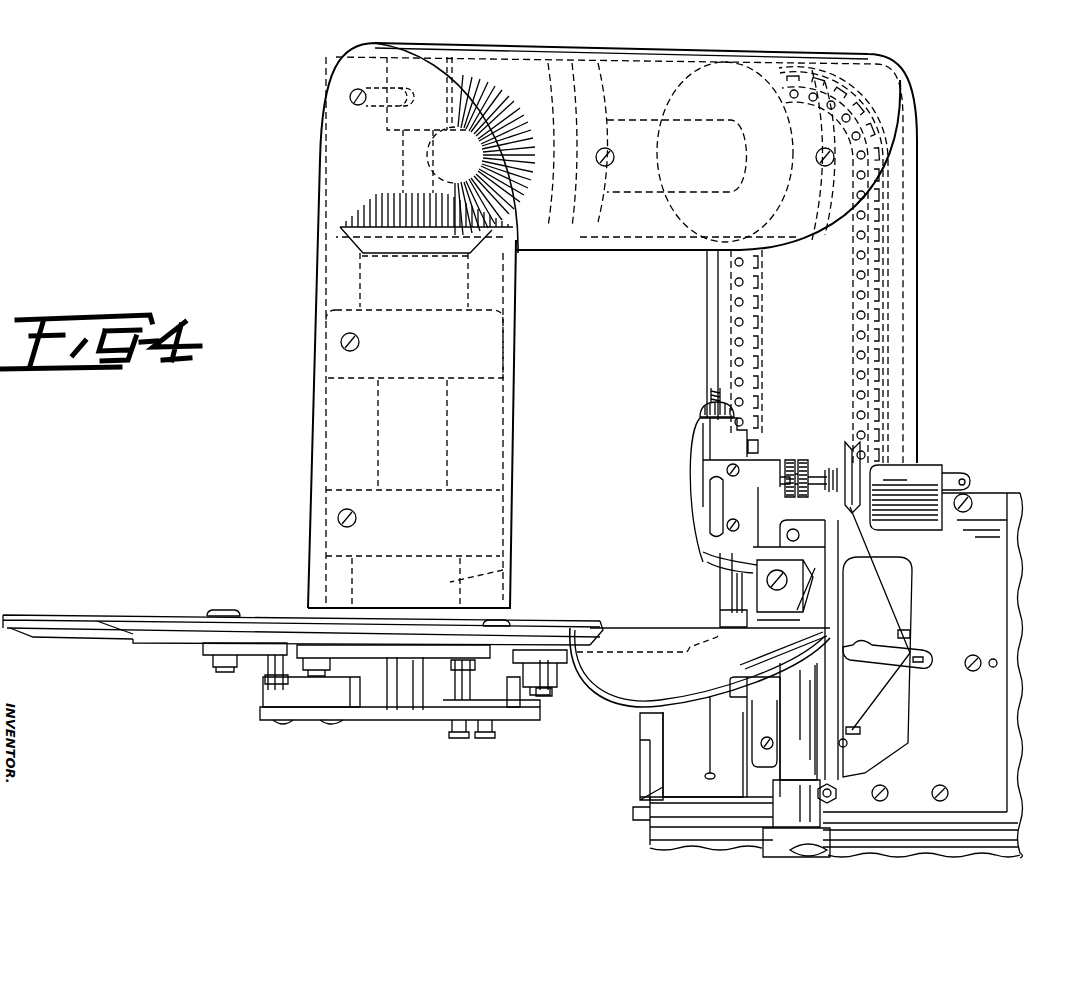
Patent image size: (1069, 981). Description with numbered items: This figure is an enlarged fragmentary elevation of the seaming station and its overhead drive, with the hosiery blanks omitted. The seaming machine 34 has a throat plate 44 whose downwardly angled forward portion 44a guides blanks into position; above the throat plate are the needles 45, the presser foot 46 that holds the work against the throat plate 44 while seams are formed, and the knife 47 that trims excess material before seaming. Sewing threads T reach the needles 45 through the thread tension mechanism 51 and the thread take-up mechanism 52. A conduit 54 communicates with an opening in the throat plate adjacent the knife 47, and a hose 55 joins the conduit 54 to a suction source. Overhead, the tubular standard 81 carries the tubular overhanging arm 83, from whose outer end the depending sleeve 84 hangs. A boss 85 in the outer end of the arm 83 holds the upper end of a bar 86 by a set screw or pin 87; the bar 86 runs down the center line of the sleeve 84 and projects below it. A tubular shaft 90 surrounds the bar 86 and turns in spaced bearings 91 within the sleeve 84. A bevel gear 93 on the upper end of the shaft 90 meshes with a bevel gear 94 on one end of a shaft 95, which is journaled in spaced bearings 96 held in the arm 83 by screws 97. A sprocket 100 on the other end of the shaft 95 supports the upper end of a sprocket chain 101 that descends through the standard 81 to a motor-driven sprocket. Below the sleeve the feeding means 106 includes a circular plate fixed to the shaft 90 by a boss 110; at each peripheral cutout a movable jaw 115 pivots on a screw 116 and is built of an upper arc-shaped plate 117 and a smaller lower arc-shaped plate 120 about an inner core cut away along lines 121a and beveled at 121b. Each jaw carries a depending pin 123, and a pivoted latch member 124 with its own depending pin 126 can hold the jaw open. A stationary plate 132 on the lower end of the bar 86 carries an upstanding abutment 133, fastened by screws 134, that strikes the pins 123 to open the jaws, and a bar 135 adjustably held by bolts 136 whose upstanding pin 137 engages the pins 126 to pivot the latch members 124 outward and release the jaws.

The seaming machine 34 is at (977, 597).
The throat plate 44 is at (628, 627).
The forward portion of throat plate 44a is at (630, 698).
The needles 45 is at (737, 583).
The presser foot 46 is at (728, 600).
The knife 47 is at (787, 633).
The thread tension mechanism 51 is at (847, 458).
The thread take-up mechanism 52 is at (923, 647).
The conduit 54 is at (826, 704).
The hose 55 is at (731, 827).
The tubular standard 81 is at (820, 392).
The overhanging arm 83 is at (660, 253).
The depending sleeve 84 is at (320, 443).
The boss 85 is at (426, 80).
The bar 86 is at (412, 148).
The set screw or pin 87 is at (352, 97).
The tubular shaft 90 is at (395, 433).
The bearings 91 is at (338, 357).
The bevel gear 93 is at (370, 213).
The bevel gear 94 is at (485, 86).
The shaft 95 is at (648, 98).
The bearings 96 is at (517, 70).
The screws 97 is at (613, 157).
The sprocket 100 is at (808, 232).
The sprocket chain 101 is at (887, 332).
The feeding means 106 is at (182, 578).
The boss 110 is at (503, 570).
The movable jaw 115 is at (75, 572).
The screw 116 is at (222, 613).
The upper arc-shaped plate 117 is at (40, 613).
The lower arc-shaped plate 120 is at (78, 633).
The cut-away lines of inner core 121a is at (110, 623).
The inward bevel of inner core 121b is at (30, 630).
The depending pin 123 is at (277, 688).
The latch member 124 is at (212, 652).
The depending pin 126 is at (263, 672).
The plate 132 is at (367, 713).
The upstanding abutment 133 is at (298, 722).
The screws 134 is at (282, 722).
The bar 135 is at (492, 738).
The bolts 136 is at (458, 738).
The upstanding pin 137 is at (543, 717).
The sewing threads T is at (900, 608).